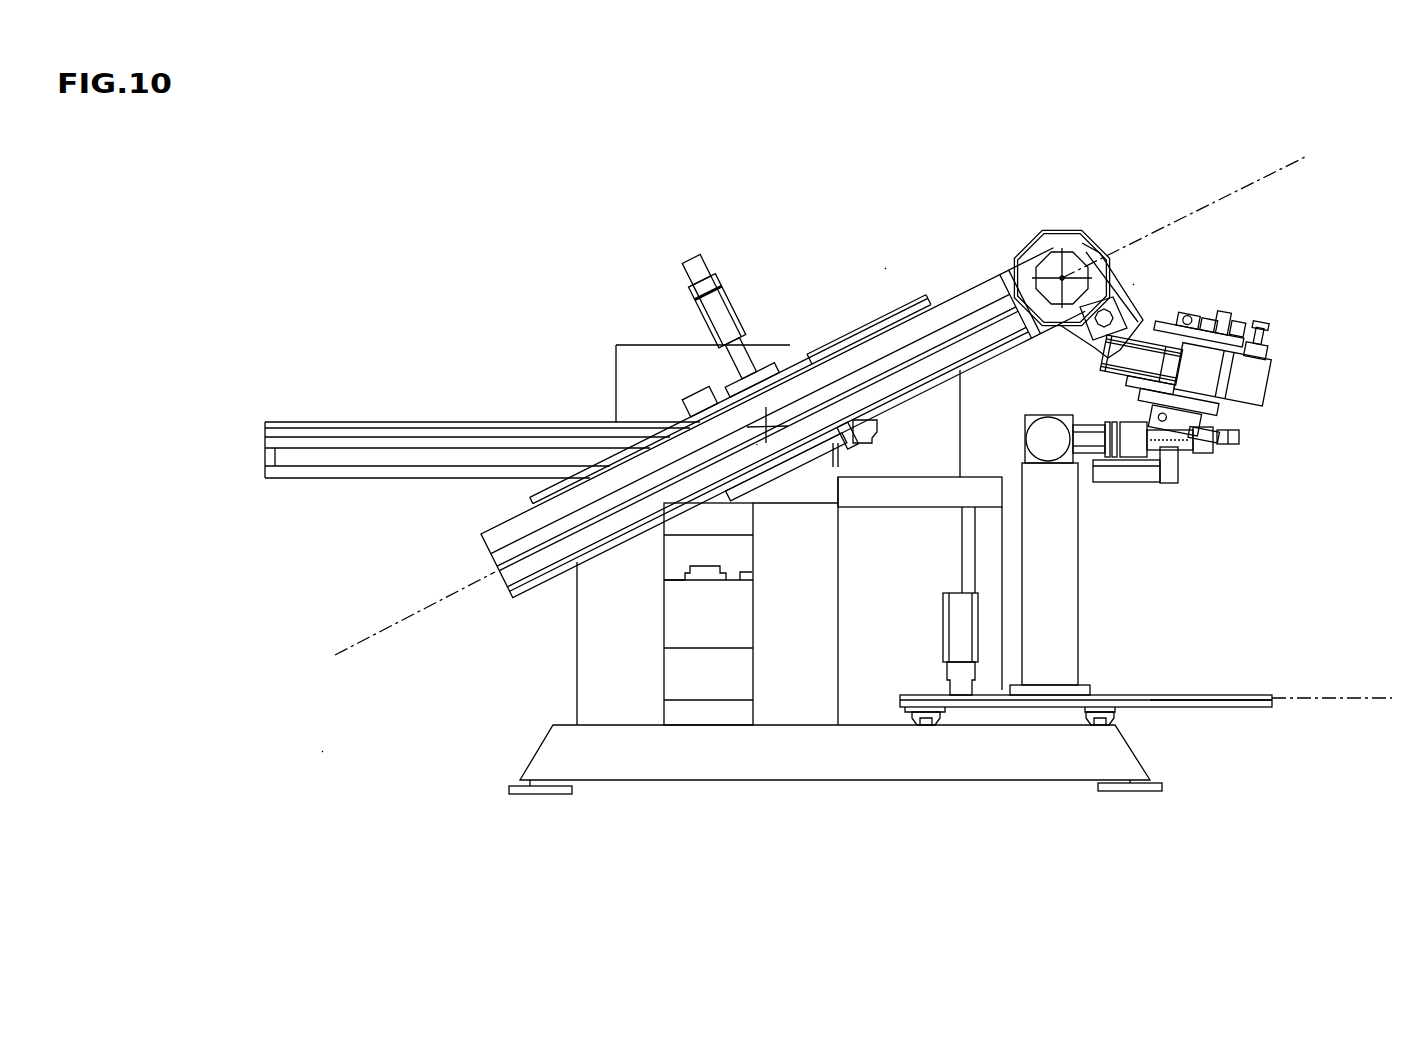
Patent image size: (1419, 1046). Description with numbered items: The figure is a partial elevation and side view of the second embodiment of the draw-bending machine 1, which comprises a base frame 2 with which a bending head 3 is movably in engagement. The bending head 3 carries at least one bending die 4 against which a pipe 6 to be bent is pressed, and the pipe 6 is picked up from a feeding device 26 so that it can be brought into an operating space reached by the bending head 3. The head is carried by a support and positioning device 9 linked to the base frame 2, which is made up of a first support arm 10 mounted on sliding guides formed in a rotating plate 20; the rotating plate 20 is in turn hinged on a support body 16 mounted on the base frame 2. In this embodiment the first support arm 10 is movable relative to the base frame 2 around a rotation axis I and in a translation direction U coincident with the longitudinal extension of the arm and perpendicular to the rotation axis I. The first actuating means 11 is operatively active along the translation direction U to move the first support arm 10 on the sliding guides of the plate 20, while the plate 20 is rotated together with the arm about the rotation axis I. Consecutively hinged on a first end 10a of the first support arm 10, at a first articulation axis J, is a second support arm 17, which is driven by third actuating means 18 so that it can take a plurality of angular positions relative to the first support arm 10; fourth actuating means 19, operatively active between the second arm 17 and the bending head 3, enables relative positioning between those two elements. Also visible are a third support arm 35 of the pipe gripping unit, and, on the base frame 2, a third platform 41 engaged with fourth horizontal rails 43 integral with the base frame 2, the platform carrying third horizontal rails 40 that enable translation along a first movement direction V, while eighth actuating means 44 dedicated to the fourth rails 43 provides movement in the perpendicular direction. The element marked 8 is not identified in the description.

The draw-bending machine 1 is at (322, 752).
The base frame 2 is at (675, 785).
The bending head 3 is at (1278, 395).
The bending die 4 is at (1265, 340).
The pipe 6 is at (1240, 448).
The tool head 8 is at (1120, 352).
The support and positioning device 9 is at (885, 268).
The first support arm 10 is at (945, 292).
The first end of the first support arm 10a is at (1015, 262).
The first actuating means 11 is at (690, 298).
The support body 16 is at (575, 632).
The second support arm 17 is at (1133, 284).
The third actuating means 18 is at (1055, 262).
The fourth actuating means 19 is at (1128, 283).
The rotating plate 20 is at (757, 445).
The feeding device 26 is at (343, 422).
The third support arm 35 is at (1083, 462).
The third horizontal rails 40 is at (1240, 700).
The third platform 41 is at (1172, 707).
The fourth horizontal rails 43 is at (925, 722).
The eighth actuating means 44 is at (962, 628).
The rotation axis I is at (765, 428).
The first articulation axis J is at (1061, 277).
The translation direction U is at (333, 632).
The first movement direction V is at (1367, 700).